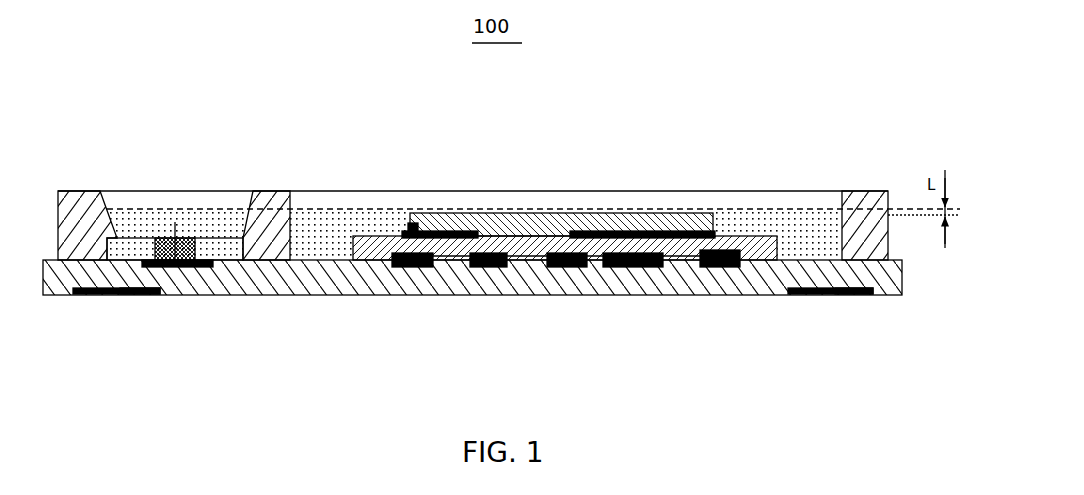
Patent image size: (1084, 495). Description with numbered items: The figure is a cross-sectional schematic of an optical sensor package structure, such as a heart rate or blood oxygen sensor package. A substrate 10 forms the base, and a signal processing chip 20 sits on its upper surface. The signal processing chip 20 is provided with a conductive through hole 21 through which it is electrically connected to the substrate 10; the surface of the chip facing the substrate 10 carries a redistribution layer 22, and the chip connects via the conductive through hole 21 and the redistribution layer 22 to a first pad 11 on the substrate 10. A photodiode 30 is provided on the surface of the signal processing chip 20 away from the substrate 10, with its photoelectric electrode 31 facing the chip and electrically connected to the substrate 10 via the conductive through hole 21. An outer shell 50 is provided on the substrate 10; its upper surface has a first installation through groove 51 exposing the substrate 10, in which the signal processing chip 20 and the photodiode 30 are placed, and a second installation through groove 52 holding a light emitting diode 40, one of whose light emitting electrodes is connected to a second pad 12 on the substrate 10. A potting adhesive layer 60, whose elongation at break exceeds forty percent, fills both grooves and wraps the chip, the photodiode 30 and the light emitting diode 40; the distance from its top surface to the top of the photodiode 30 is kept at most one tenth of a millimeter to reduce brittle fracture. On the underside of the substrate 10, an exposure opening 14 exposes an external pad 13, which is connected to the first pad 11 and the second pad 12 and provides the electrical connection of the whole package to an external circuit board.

The substrate 10 is at (418, 296).
The first pad 11 is at (613, 269).
The second pad 12 is at (181, 269).
The external pad 13 is at (96, 296).
The exposure opening 14 is at (133, 296).
The signal processing chip 20 is at (585, 234).
The conductive through hole 21 is at (413, 222).
The redistribution layer 22 is at (533, 268).
The photodiode 30 is at (518, 211).
The photoelectric electrode 31 is at (455, 229).
The light emitting diode 40 is at (198, 257).
The outer shell 50 is at (500, 186).
The first installation through groove 51 is at (743, 190).
The second installation through groove 52 is at (207, 190).
The potting adhesive layer 60 is at (150, 228).